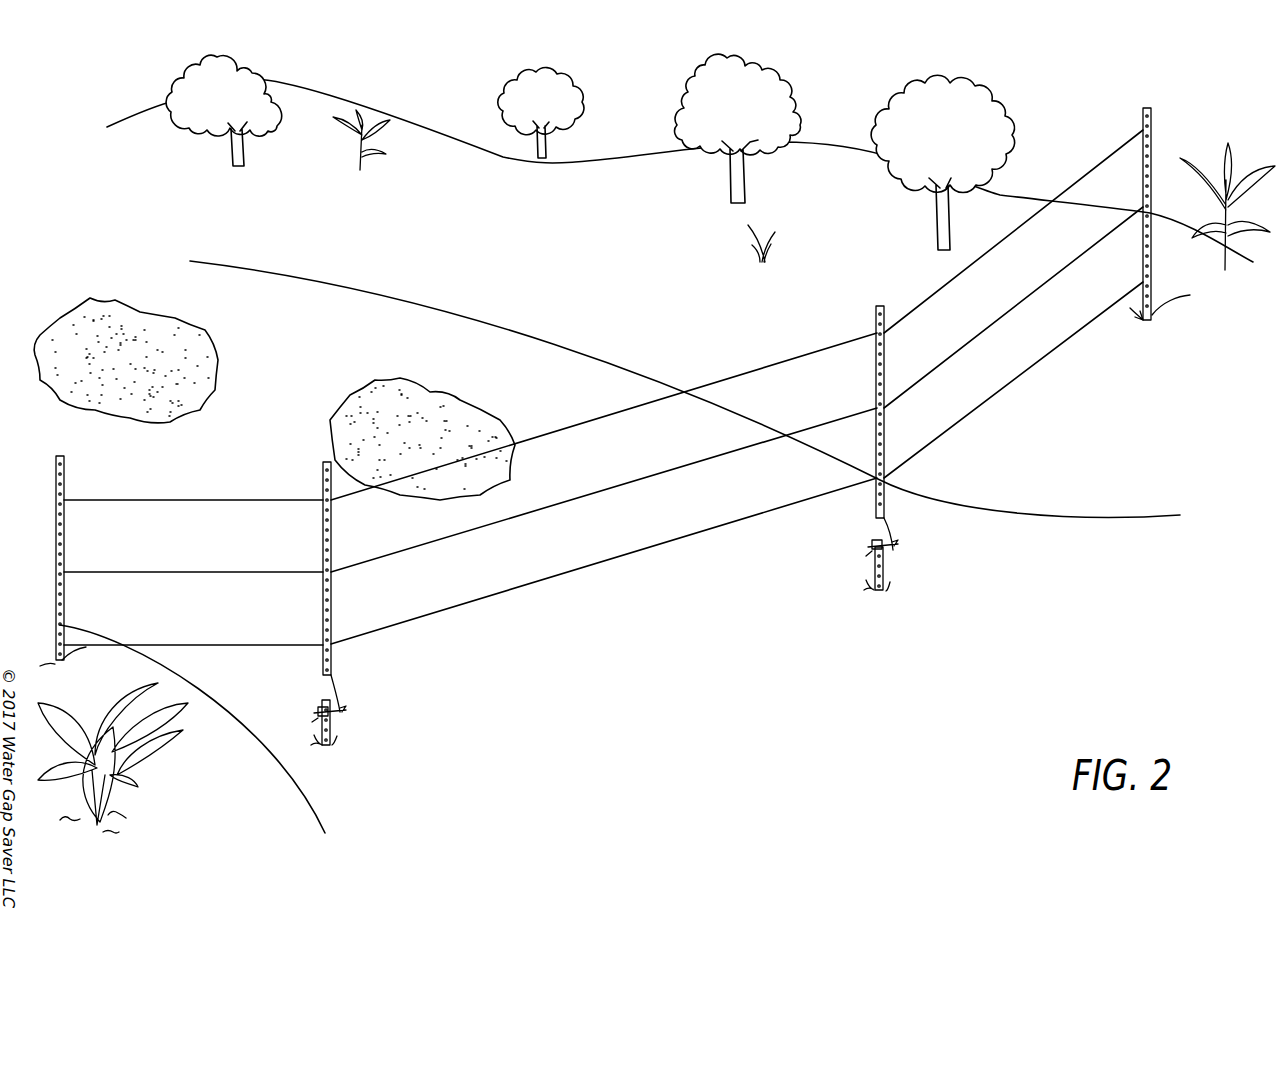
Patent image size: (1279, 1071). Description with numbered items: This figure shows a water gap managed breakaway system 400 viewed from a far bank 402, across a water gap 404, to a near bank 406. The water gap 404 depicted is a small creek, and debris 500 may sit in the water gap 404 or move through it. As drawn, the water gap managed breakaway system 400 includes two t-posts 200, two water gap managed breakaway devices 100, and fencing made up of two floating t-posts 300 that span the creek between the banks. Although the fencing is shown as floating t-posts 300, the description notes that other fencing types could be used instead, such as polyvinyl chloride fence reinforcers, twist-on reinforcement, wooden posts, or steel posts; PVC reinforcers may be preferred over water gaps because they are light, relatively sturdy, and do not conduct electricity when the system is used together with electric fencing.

The water gap managed breakaway device 100 is at (316, 703).
The t-post 200 is at (335, 735).
The floating t-post 300 is at (333, 597).
The water gap managed breakaway system 400 is at (1170, 98).
The far bank 402 is at (1048, 470).
The water gap 404 is at (878, 697).
The near bank 406 is at (296, 830).
The debris 500 is at (150, 355).